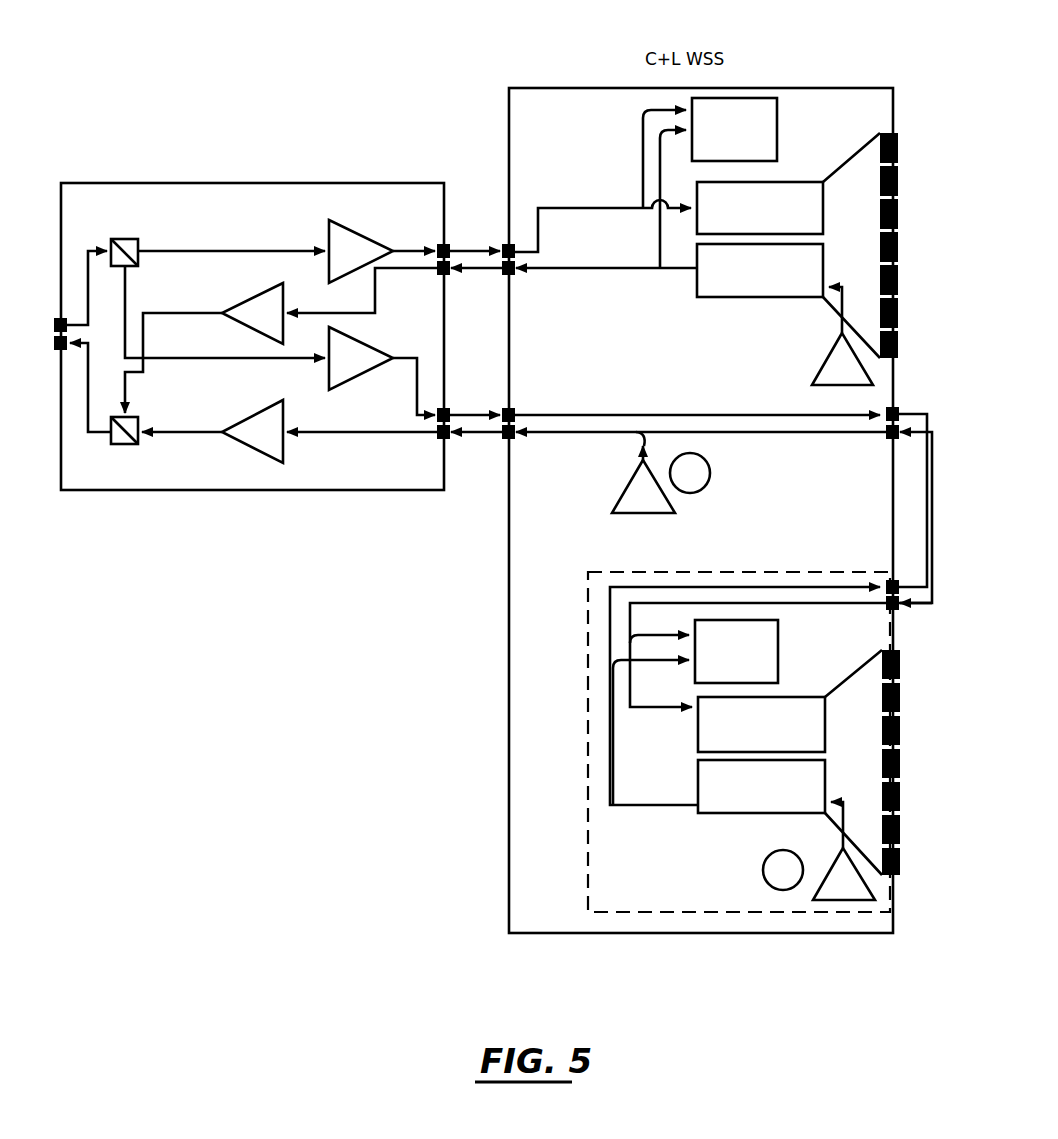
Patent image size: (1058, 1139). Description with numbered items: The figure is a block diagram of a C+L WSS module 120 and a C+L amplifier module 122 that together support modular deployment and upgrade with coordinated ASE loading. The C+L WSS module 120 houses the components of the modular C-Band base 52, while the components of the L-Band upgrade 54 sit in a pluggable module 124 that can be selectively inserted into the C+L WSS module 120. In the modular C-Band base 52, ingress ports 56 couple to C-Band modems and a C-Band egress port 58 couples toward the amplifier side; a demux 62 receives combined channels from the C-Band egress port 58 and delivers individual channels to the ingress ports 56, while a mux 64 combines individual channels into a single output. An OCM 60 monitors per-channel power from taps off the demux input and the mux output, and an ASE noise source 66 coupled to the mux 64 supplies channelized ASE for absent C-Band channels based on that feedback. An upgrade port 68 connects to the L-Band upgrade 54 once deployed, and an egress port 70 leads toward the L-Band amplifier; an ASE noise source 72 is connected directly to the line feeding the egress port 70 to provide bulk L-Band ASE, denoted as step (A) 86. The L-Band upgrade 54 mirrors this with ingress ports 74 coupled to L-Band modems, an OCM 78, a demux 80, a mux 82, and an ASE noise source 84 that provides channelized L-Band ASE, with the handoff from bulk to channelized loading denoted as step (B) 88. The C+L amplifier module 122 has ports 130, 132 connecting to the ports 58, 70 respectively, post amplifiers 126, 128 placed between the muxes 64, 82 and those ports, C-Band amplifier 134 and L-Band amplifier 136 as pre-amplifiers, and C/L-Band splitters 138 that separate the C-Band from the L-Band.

The C+L WSS module 120 is at (814, 52).
The C+L amplifier module 122 is at (259, 148).
The pluggable module 124 is at (750, 568).
The modular C-Band base 52 is at (590, 151).
The L-Band upgrade 54 is at (632, 895).
The ingress ports 56 is at (900, 130).
The C-Band egress port 58 is at (499, 238).
The OCM 60 is at (778, 132).
The demux 62 is at (782, 182).
The mux 64 is at (727, 298).
The ASE noise source 66 is at (826, 362).
The upgrade port 68 is at (900, 400).
The egress port 70 is at (501, 403).
The ASE noise source 72 is at (622, 497).
The ingress ports 74 is at (904, 730).
The OCM 78 is at (779, 658).
The demux 80 is at (795, 697).
The mux 82 is at (705, 814).
The ASE noise source 84 is at (832, 868).
The step (A) 86 is at (712, 470).
The step (B) 88 is at (764, 857).
The post amplifier 126 is at (258, 295).
The post amplifier 128 is at (253, 452).
The port 130 is at (450, 284).
The port 132 is at (450, 448).
The C-Band amplifier 134 is at (362, 233).
The L-Band amplifier 136 is at (340, 388).
The C/L-Band splitters 138 is at (126, 237).